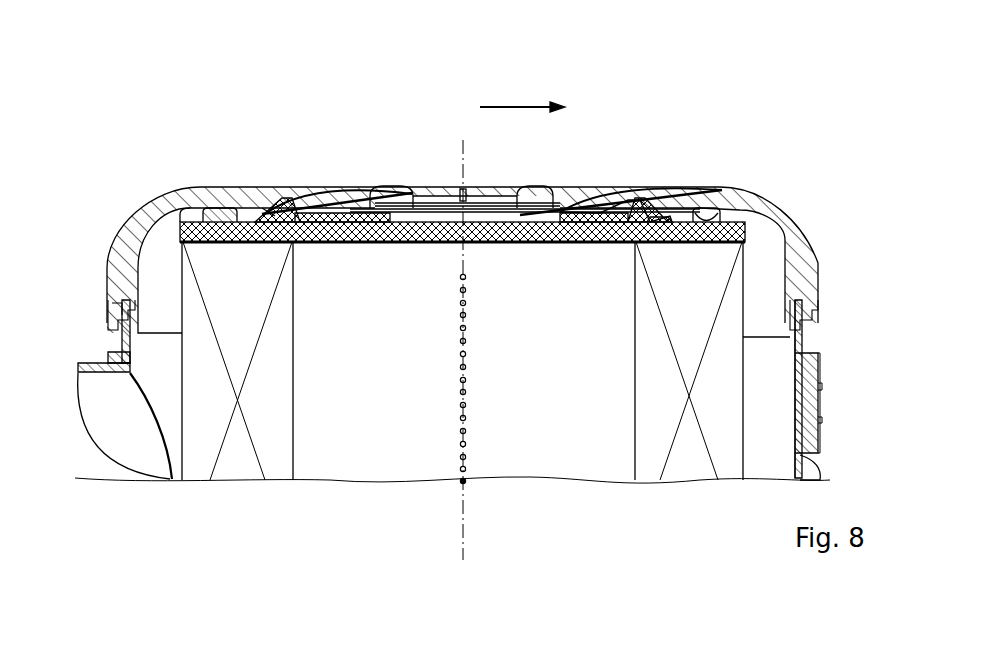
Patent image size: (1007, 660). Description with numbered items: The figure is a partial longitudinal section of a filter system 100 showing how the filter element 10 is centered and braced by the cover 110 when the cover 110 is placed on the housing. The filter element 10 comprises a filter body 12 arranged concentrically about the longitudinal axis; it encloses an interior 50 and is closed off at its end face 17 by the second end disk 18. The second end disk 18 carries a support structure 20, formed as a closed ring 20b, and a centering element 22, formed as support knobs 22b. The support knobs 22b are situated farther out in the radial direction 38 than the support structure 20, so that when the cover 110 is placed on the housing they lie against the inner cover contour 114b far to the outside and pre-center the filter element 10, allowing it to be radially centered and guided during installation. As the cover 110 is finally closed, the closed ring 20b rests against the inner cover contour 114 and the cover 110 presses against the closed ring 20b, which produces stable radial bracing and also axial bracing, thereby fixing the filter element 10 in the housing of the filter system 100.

The filter element 10 is at (745, 420).
The filter body 12 is at (722, 387).
The end face 17 is at (553, 215).
The second end disk 18 is at (581, 218).
The support structure 20 is at (462, 185).
The closed ring 20b is at (307, 188).
The centering element 22 is at (199, 174).
The support knobs 22b is at (215, 213).
The radial direction 38 is at (516, 106).
The interior 50 is at (545, 411).
The filter system 100 is at (733, 150).
The cover 110 is at (783, 213).
The inner cover contour 114 is at (268, 210).
The inner cover contour 114b is at (693, 210).